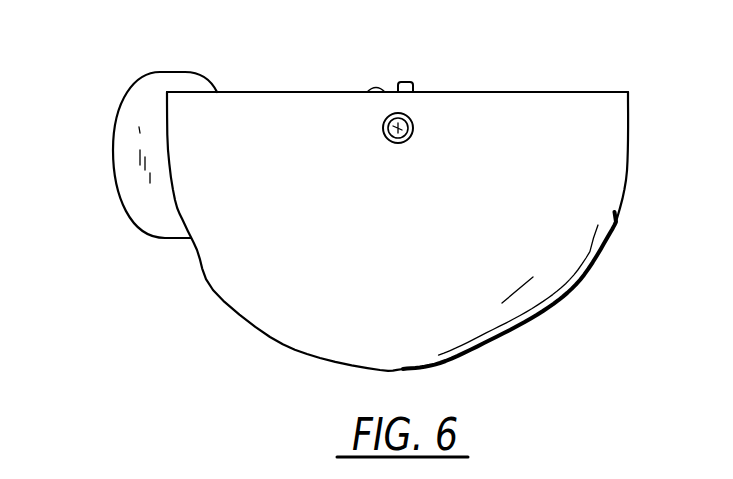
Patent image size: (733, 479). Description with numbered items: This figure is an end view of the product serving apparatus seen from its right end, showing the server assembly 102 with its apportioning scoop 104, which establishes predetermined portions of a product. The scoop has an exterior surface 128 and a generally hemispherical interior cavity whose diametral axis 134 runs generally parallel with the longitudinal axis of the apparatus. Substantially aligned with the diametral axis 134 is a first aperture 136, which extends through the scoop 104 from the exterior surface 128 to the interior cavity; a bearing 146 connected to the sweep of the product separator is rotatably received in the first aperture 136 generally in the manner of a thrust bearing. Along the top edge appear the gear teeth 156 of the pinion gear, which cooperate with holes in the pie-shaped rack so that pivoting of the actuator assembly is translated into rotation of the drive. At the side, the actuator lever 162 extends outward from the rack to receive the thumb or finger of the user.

The server assembly 102 is at (610, 235).
The apportioning scoop 104 is at (602, 92).
The exterior surface 128 is at (538, 298).
The diametral axis 134 is at (409, 139).
The first aperture 136 is at (409, 117).
The bearing 146 is at (383, 131).
The gear teeth 156 is at (413, 82).
The actuator lever 162 is at (140, 147).